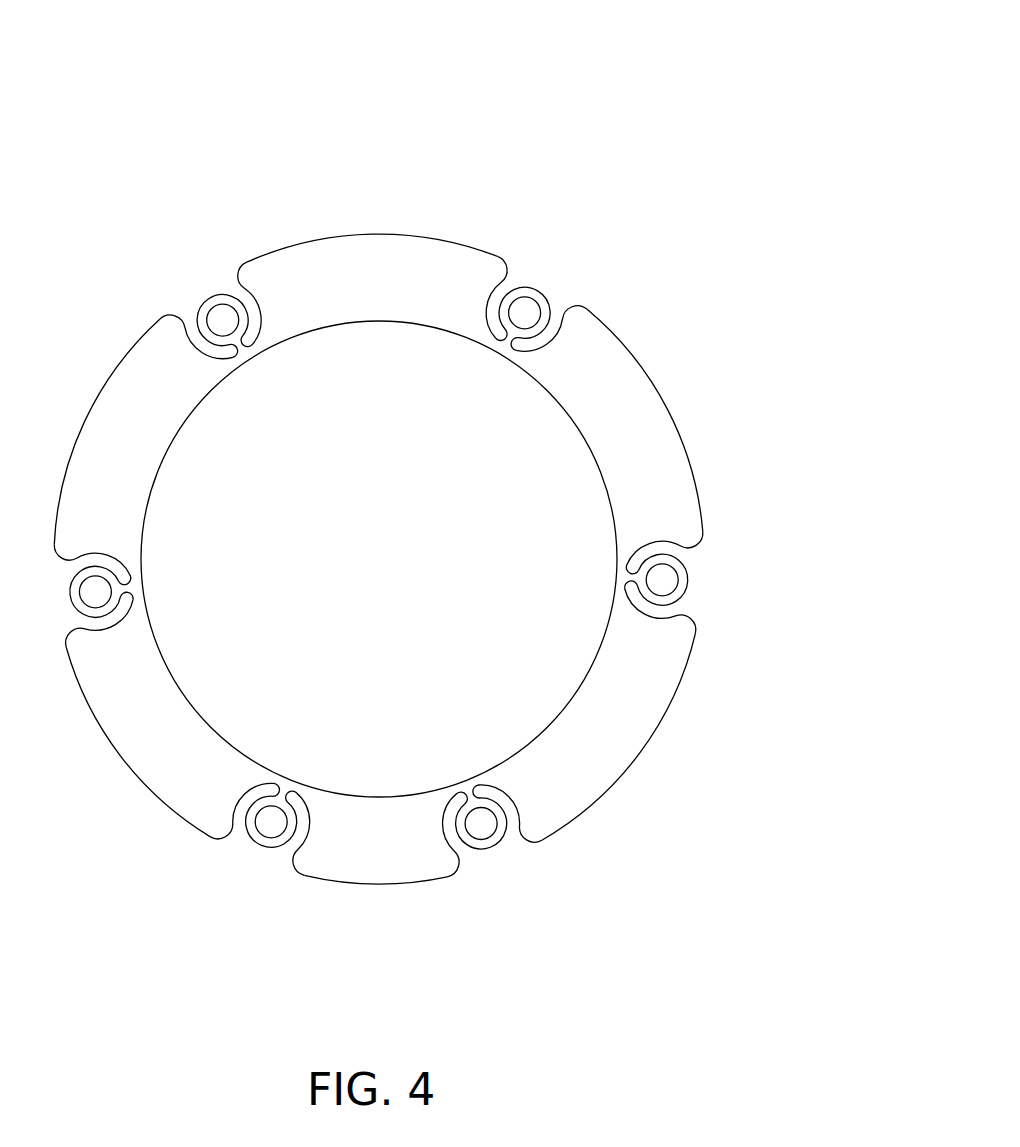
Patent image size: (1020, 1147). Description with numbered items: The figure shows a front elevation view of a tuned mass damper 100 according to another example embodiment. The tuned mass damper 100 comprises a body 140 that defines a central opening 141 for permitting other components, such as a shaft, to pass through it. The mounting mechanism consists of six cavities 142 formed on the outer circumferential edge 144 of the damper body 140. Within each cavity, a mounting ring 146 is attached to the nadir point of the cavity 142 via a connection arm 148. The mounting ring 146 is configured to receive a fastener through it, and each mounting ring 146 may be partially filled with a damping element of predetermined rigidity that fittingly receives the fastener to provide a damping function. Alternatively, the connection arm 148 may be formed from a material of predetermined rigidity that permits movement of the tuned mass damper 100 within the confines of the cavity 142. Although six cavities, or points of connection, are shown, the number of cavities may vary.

The tuned mass damper 100 is at (665, 92).
The body 140 is at (293, 262).
The central opening 141 is at (398, 584).
The cavity 142 is at (490, 297).
The outer circumferential edge 144 is at (697, 495).
The mounting ring 146 is at (541, 303).
The connection arm 148 is at (504, 302).